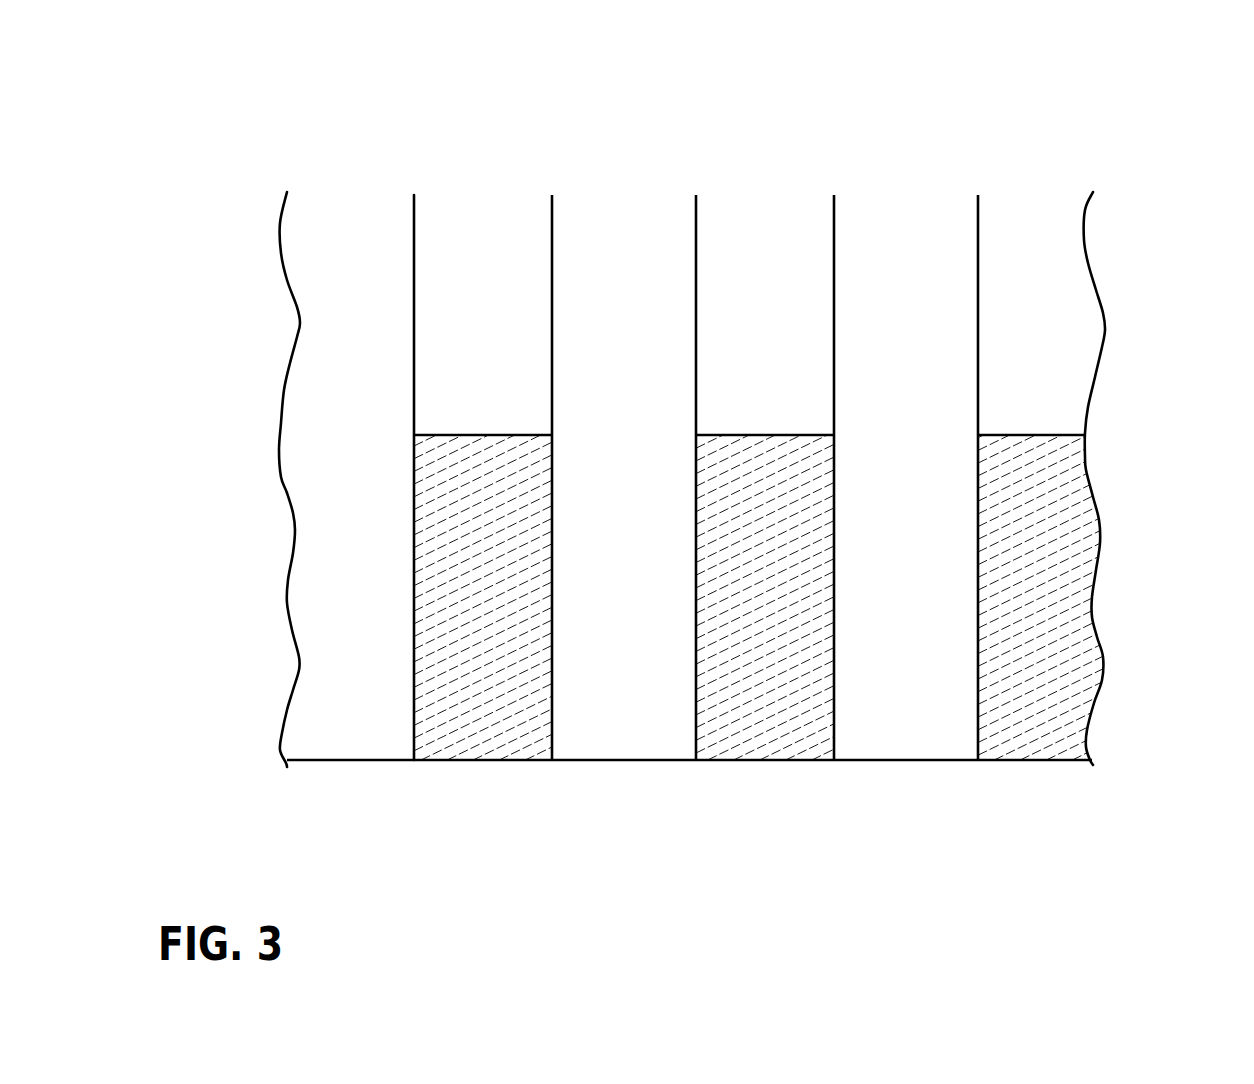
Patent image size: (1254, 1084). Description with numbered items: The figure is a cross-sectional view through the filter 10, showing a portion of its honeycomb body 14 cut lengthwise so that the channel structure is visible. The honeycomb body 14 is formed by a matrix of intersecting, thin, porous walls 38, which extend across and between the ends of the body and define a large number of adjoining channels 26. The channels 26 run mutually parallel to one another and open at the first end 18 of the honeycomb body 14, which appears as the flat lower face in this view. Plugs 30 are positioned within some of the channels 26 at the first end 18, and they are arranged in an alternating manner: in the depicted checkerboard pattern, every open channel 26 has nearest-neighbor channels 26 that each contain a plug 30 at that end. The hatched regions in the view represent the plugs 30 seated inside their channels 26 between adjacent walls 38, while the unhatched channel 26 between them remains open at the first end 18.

The filter 10 is at (760, 471).
The honeycomb body 14 is at (1078, 186).
The first end 18 is at (621, 793).
The channels 26 is at (798, 716).
The plugs 30 is at (500, 727).
The porous walls 38 is at (978, 345).